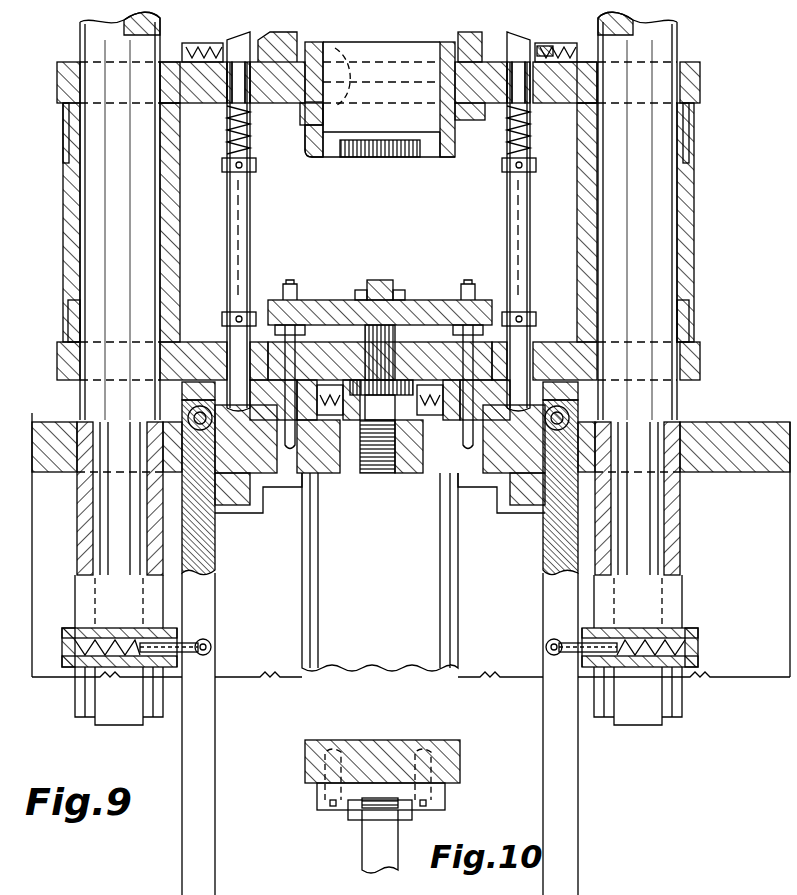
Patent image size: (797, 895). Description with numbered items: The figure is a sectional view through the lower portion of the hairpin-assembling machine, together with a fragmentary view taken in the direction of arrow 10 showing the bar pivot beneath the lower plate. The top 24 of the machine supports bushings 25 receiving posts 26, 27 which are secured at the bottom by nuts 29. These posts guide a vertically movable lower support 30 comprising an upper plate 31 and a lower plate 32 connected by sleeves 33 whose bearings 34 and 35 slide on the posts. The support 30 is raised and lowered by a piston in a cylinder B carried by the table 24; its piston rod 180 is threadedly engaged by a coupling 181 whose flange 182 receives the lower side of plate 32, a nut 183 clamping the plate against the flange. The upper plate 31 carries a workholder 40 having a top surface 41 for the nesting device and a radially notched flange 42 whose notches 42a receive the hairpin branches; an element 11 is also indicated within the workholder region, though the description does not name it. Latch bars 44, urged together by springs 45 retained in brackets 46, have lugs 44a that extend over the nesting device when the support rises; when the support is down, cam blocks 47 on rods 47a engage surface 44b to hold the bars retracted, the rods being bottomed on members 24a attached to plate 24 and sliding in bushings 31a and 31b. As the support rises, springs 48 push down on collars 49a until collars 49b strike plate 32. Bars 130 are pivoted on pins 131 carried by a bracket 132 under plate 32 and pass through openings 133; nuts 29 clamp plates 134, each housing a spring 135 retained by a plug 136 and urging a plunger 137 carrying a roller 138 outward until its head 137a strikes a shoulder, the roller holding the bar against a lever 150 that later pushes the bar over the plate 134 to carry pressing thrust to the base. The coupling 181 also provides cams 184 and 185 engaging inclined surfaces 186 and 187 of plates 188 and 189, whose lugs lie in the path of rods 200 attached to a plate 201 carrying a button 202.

In FIG. 9, the arrow 10 is at (590, 390).
In FIG. 9, the seal groove 11 is at (328, 108).
In FIG. 9, the top 24 is at (736, 422).
In FIG. 9, the members 24a is at (266, 320).
In FIG. 9, the bushings 25 is at (88, 518).
In FIG. 9, the post 26 is at (90, 245).
In FIG. 9, the post 27 is at (672, 246).
In FIG. 9, the nuts 29 is at (78, 720).
In FIG. 9, the lower support 30 is at (771, 140).
In FIG. 9, the plate 31 is at (700, 72).
In FIG. 9, the bushing 31a is at (228, 112).
In FIG. 9, the bushing 31b is at (222, 345).
In FIG. 9, the plate 32 is at (700, 362).
In FIG. 10, the plate 32 is at (455, 748).
In FIG. 9, the sleeves 33 is at (64, 190).
In FIG. 9, the bearing 34 is at (66, 135).
In FIG. 9, the bearing 35 is at (66, 322).
In FIG. 9, the workholder 40 is at (455, 152).
In FIG. 9, the top surface 41 is at (460, 45).
In FIG. 9, the radially notched flange 42 is at (443, 157).
In FIG. 9, the notches 42a is at (338, 157).
In FIG. 9, the latch bars 44 is at (285, 36).
In FIG. 9, the lugs 44a is at (312, 42).
In FIG. 9, the surface 44b is at (222, 44).
In FIG. 9, the springs 45 is at (578, 50).
In FIG. 9, the brackets 46 is at (182, 52).
In FIG. 9, the cam blocks 47 is at (242, 36).
In FIG. 9, the rods 47a is at (250, 250).
In FIG. 9, the springs 48 is at (250, 134).
In FIG. 9, the collars 49a is at (224, 172).
In FIG. 9, the collars 49b is at (222, 318).
In FIG. 9, the bars 130 is at (216, 792).
In FIG. 10, the bars 130 is at (362, 857).
In FIG. 9, the pins 131 is at (208, 424).
In FIG. 10, the pins 131 is at (348, 820).
In FIG. 9, the bracket 132 is at (182, 390).
In FIG. 10, the bracket 132 is at (446, 796).
In FIG. 9, the openings 133 is at (170, 453).
In FIG. 9, the plates 134 is at (72, 628).
In FIG. 9, the spring 135 is at (128, 638).
In FIG. 9, the plug 136 is at (62, 665).
In FIG. 9, the plunger 137 is at (186, 642).
In FIG. 9, the head 137a is at (175, 630).
In FIG. 9, the roller 138 is at (210, 654).
In FIG. 9, the lever 150 is at (270, 514).
In FIG. 9, the piston rod 180 is at (412, 440).
In FIG. 9, the coupling 181 is at (402, 356).
In FIG. 9, the flange 182 is at (384, 390).
In FIG. 9, the nut 183 is at (432, 300).
In FIG. 9, the cam 184 is at (348, 380).
In FIG. 9, the cam 185 is at (412, 385).
In FIG. 9, the inclined surface 186 is at (322, 435).
In FIG. 9, the inclined surface 187 is at (395, 462).
In FIG. 9, the plate 188 is at (468, 462).
In FIG. 9, the plate 189 is at (284, 462).
In FIG. 9, the rods 200 is at (296, 358).
In FIG. 9, the plate 201 is at (322, 300).
In FIG. 9, the button 202 is at (384, 282).
In FIG. 9, the cylinder B is at (437, 623).